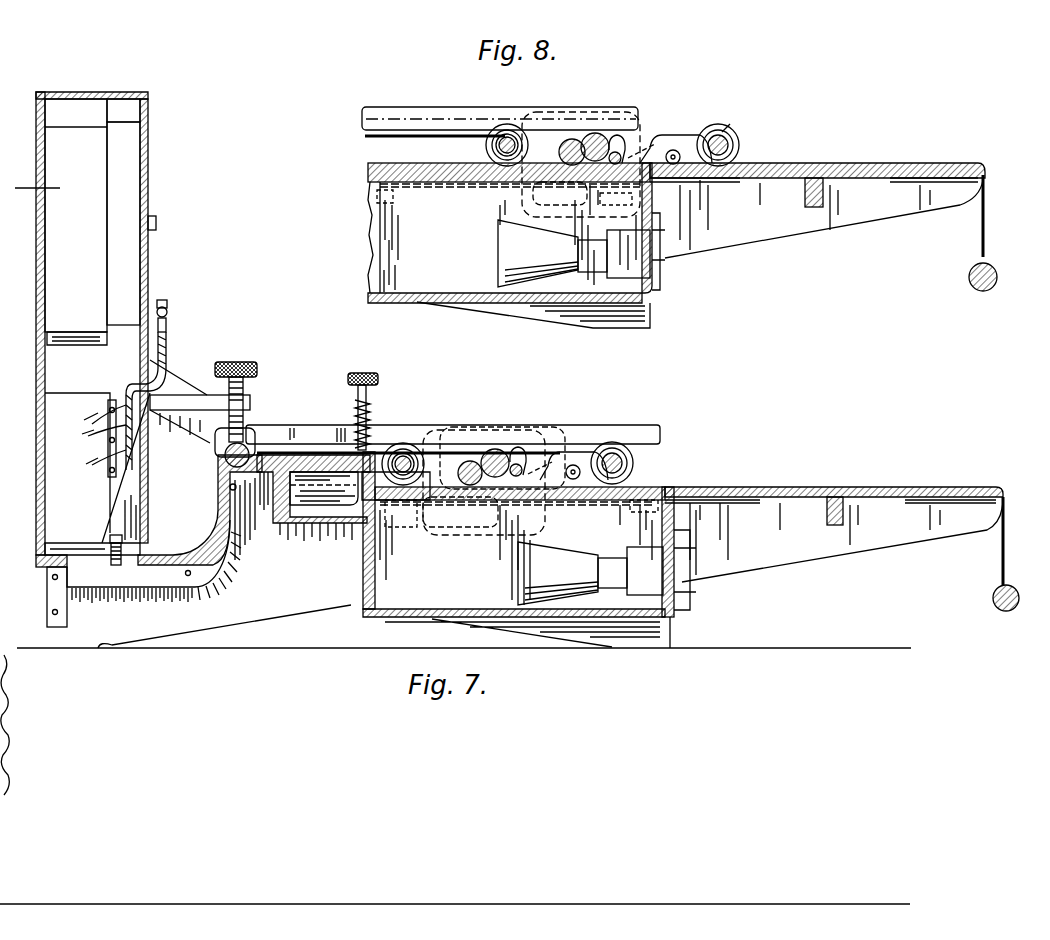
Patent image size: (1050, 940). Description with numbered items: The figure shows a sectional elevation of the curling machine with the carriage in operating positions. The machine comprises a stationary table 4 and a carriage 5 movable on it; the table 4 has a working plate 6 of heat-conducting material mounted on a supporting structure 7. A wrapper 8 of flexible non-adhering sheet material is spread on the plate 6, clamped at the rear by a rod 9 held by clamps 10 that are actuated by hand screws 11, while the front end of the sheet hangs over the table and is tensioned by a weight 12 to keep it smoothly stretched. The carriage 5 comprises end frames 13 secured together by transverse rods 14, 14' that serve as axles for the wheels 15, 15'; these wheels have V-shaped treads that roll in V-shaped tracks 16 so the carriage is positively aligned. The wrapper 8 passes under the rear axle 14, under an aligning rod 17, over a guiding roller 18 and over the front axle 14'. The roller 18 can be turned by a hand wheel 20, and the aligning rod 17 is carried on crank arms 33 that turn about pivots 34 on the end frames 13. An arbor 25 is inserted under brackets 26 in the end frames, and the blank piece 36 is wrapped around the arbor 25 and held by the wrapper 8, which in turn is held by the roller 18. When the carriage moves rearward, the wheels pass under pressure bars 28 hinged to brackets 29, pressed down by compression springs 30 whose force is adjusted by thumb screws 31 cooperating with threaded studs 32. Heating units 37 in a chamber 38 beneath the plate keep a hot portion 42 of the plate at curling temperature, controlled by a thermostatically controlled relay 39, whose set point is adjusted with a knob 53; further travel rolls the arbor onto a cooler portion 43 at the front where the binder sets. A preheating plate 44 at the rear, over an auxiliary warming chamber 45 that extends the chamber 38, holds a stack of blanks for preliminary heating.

In FIG. 8, the stationary table 4 is at (880, 212).
In FIG. 7, the stationary table 4 is at (893, 540).
In FIG. 8, the carriage 5 is at (737, 123).
In FIG. 8, the working plate 6 is at (368, 165).
In FIG. 7, the working plate 6 is at (452, 487).
In FIG. 8, the supporting structure 7 is at (652, 312).
In FIG. 7, the supporting structure 7 is at (345, 604).
In FIG. 8, the wrapper 8 is at (366, 137).
In FIG. 7, the wrapper 8 is at (443, 450).
In FIG. 7, the rod 9 is at (216, 470).
In FIG. 7, the clamps 10 is at (224, 455).
In FIG. 7, the hand screws 11 is at (241, 362).
In FIG. 8, the weight 12 is at (973, 286).
In FIG. 7, the weight 12 is at (993, 604).
In FIG. 8, the end frames 13 is at (642, 128).
In FIG. 7, the end frames 13 is at (440, 533).
In FIG. 8, the rear transverse rod 14 is at (747, 125).
In FIG. 7, the rear transverse rod 14 is at (645, 465).
In FIG. 8, the front transverse rod 14' is at (497, 115).
In FIG. 7, the front transverse rod 14' is at (397, 503).
In FIG. 8, the rear wheels 15 is at (747, 144).
In FIG. 7, the rear wheels 15 is at (647, 462).
In FIG. 8, the front wheels 15' is at (480, 145).
In FIG. 7, the front wheels 15' is at (403, 442).
In FIG. 8, the V-shaped tracks 16 is at (930, 163).
In FIG. 7, the V-shaped tracks 16 is at (935, 487).
In FIG. 8, the aligning rod 17 is at (617, 151).
In FIG. 7, the aligning rod 17 is at (517, 477).
In FIG. 8, the guiding roller 18 is at (595, 133).
In FIG. 7, the guiding roller 18 is at (500, 450).
In FIG. 7, the hand wheel 20 is at (462, 432).
In FIG. 8, the arbor 25 is at (582, 195).
In FIG. 7, the arbor 25 is at (460, 512).
In FIG. 8, the brackets 26 is at (522, 193).
In FIG. 7, the brackets 26 is at (482, 535).
In FIG. 8, the pressure bars 28 is at (426, 106).
In FIG. 7, the pressure bars 28 is at (640, 425).
In FIG. 7, the brackets 29 is at (218, 437).
In FIG. 7, the compression springs 30 is at (350, 385).
In FIG. 7, the thumb screws 31 is at (372, 372).
In FIG. 7, the threaded studs 32 is at (355, 410).
In FIG. 8, the crank arms 33 is at (676, 142).
In FIG. 7, the crank arms 33 is at (553, 455).
In FIG. 8, the pivots 34 is at (680, 165).
In FIG. 7, the pivots 34 is at (578, 465).
In FIG. 8, the piece 36 is at (568, 139).
In FIG. 7, the piece 36 is at (482, 481).
In FIG. 8, the heating units 37 is at (510, 247).
In FIG. 7, the heating units 37 is at (590, 573).
In FIG. 8, the chamber 38 is at (510, 233).
In FIG. 7, the chamber 38 is at (529, 534).
In FIG. 7, the thermostatically controlled relay 39 is at (55, 447).
In FIG. 8, the hot portion 42 is at (441, 185).
In FIG. 7, the hot portion 42 is at (602, 504).
In FIG. 8, the cooler portion 43 is at (856, 163).
In FIG. 7, the cooler portion 43 is at (838, 487).
In FIG. 7, the preheating plate 44 is at (318, 455).
In FIG. 7, the auxiliary warming chamber 45 is at (330, 510).
In FIG. 7, the knob 53 is at (158, 222).